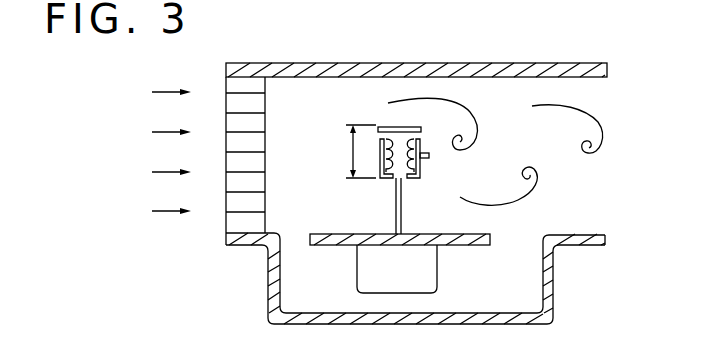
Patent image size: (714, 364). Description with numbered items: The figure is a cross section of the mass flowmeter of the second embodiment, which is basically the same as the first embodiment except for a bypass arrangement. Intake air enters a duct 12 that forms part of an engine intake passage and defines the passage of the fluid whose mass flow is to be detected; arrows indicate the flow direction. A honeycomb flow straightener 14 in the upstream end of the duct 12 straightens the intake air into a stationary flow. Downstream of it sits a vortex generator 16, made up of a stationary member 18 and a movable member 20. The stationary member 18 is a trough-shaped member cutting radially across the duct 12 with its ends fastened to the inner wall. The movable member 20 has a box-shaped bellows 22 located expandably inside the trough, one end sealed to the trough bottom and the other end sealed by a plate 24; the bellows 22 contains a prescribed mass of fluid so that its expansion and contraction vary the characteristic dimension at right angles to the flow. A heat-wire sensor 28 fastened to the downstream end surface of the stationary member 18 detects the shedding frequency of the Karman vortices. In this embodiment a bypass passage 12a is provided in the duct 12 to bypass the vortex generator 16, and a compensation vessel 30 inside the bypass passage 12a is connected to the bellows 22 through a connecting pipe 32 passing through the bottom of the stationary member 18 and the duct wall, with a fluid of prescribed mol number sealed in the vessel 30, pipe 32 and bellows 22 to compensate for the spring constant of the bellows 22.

The duct 12 is at (346, 62).
The bypass passage 12a is at (288, 288).
The honeycomb flow straightener 14 is at (236, 235).
The vortex generator 16 is at (380, 182).
The stationary member 18 is at (420, 180).
The movable member 20 is at (406, 136).
The bellows 22 is at (383, 127).
The plate 24 is at (399, 127).
The sensor 28 is at (429, 156).
The compensation vessel 30 is at (385, 295).
The connecting pipe 32 is at (401, 208).